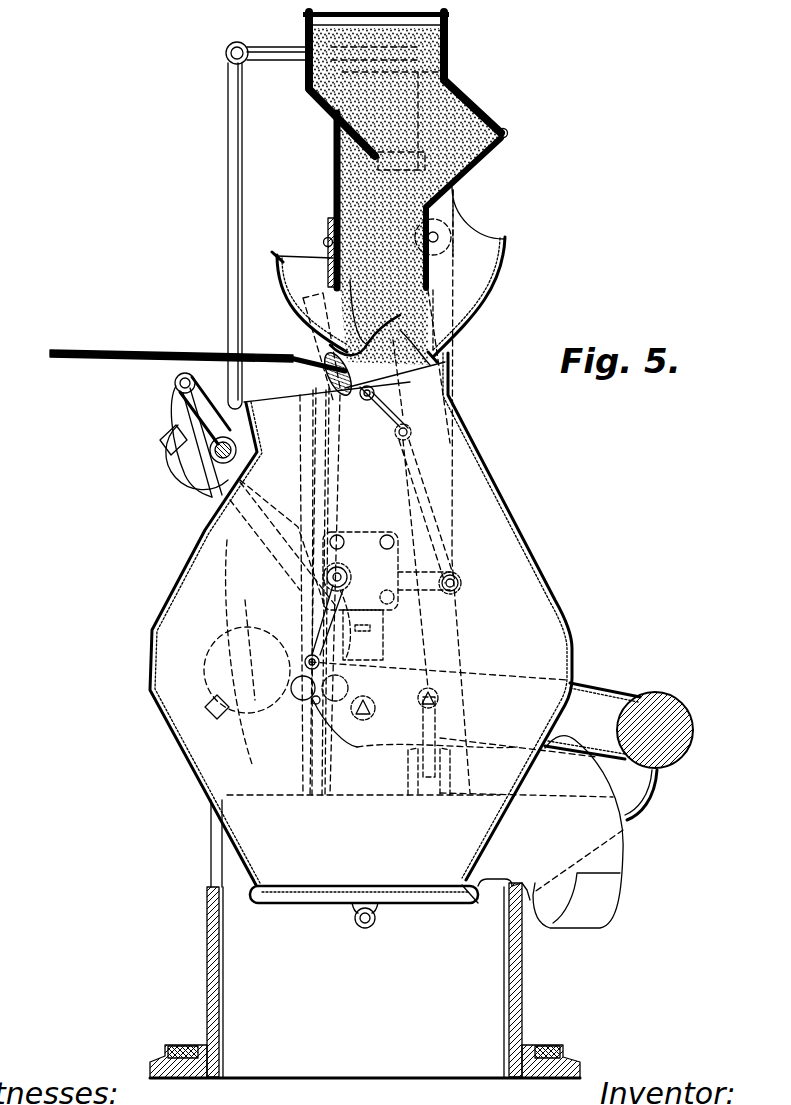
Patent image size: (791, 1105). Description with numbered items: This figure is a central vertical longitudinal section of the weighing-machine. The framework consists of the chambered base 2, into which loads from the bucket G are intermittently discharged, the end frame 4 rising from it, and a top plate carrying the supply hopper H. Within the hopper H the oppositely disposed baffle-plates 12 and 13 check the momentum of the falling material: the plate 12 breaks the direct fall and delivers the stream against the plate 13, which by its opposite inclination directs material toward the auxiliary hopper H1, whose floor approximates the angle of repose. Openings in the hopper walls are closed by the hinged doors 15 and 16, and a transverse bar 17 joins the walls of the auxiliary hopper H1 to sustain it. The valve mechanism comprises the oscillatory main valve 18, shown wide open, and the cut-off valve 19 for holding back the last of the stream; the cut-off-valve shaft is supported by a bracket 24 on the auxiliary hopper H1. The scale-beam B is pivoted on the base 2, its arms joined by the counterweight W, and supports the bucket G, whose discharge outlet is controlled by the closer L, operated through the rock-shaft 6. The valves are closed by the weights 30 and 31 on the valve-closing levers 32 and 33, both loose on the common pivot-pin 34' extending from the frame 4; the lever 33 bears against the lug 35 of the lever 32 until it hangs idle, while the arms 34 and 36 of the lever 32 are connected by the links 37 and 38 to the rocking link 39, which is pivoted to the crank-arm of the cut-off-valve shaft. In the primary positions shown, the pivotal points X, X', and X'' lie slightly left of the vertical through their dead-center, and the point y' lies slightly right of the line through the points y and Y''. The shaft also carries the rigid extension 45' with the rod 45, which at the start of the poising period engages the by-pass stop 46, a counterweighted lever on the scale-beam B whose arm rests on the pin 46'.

The supply hopper H is at (402, 91).
The baffle-plate 12 is at (331, 114).
The door 15 is at (468, 103).
The baffle-plate 13 is at (461, 170).
The door 16 is at (333, 211).
The transverse bar 17 is at (330, 258).
The auxiliary hopper H1 is at (284, 262).
The main valve 18 is at (504, 273).
The rod 45 is at (171, 342).
The rigid extension 45' is at (297, 374).
The bracket 24 is at (327, 348).
The pivotal point X'' is at (315, 383).
The cut-off valve 19 is at (343, 386).
The pivotal point Y'' is at (393, 386).
The rocking link 39 is at (394, 415).
The pivotal point y' is at (417, 440).
The weight 30 is at (191, 480).
The rock-shaft 6 is at (216, 453).
The bucket G is at (527, 576).
The link 37 is at (322, 492).
The link 38 is at (437, 513).
The valve-closing lever 32 is at (262, 505).
The arm 36 is at (412, 570).
The pivotal point X' is at (304, 573).
The pivotal point y is at (457, 587).
The lug 35 is at (313, 613).
The pivot-pin 34' is at (376, 620).
The arm 34 is at (370, 635).
The end frame 4 is at (465, 642).
The weight 31 is at (218, 649).
The valve-closing lever 33 is at (216, 703).
The by-pass stop 46 is at (273, 670).
The pivotal point X is at (350, 690).
The pin 46' is at (335, 711).
The scale-beam B is at (548, 805).
The counterweight W is at (667, 697).
The closer L is at (428, 901).
The chambered base 2 is at (523, 985).